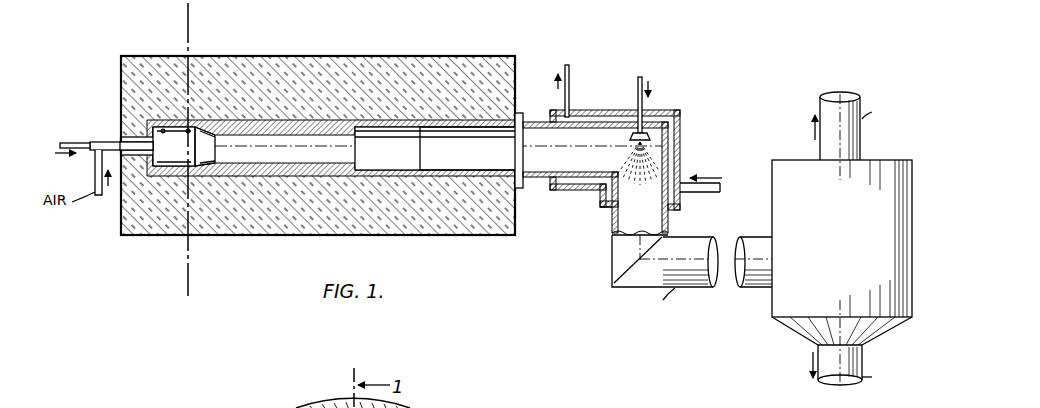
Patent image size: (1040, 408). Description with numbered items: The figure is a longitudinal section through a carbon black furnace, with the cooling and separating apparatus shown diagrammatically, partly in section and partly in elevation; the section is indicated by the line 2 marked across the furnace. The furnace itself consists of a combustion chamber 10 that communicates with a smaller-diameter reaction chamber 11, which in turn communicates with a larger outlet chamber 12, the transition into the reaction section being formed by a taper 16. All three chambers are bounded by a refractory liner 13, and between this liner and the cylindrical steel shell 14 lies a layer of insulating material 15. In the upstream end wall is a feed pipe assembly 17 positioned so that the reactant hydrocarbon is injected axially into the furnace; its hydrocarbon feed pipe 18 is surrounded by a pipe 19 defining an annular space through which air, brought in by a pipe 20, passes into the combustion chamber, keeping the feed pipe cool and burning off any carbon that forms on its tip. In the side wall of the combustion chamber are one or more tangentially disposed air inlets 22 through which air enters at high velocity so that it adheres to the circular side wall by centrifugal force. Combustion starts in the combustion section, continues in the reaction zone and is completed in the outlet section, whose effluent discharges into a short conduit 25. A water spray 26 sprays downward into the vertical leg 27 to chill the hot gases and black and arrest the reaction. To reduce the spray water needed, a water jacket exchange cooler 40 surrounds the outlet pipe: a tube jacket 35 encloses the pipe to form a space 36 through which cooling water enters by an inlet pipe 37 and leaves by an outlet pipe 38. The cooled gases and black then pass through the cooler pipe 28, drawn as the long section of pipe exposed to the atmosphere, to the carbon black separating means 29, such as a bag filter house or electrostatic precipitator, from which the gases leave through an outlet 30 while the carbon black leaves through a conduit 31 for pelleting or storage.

The section line 2- 2 is at (186, 20).
The combustion chamber 10 is at (214, 161).
The reaction chamber 11 is at (343, 156).
The outlet chamber 12 is at (422, 156).
The refractory liner 13 is at (303, 167).
The cylindrical steel shell 14 is at (290, 56).
The layer of insulating material 15 is at (395, 59).
The taper 16 is at (201, 130).
The feed pipe assembly 17 is at (77, 142).
The hydrocarbon feed pipe 18 is at (63, 143).
The pipe 19 is at (109, 142).
The pipe 20 is at (95, 170).
The tangentially disposed air inlets 22 is at (186, 134).
The conduit 25 is at (537, 121).
The water spray 26 is at (632, 140).
The vertical leg 27 is at (669, 172).
The conduit to separator 28 is at (745, 288).
The carbon black separating means 29 is at (914, 219).
The outlet 30 is at (862, 130).
The conduit 31 is at (862, 356).
The tube jacket 35 is at (592, 110).
The space 36 is at (681, 124).
The inlet pipe 37 is at (702, 192).
The outlet pipe 38 is at (570, 79).
The water jacket exchange cooler 40 is at (598, 203).